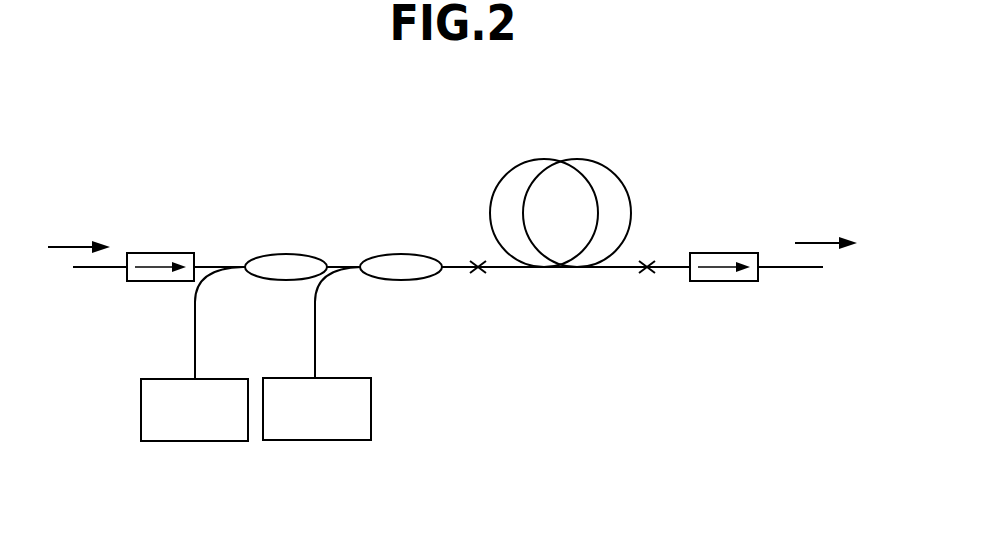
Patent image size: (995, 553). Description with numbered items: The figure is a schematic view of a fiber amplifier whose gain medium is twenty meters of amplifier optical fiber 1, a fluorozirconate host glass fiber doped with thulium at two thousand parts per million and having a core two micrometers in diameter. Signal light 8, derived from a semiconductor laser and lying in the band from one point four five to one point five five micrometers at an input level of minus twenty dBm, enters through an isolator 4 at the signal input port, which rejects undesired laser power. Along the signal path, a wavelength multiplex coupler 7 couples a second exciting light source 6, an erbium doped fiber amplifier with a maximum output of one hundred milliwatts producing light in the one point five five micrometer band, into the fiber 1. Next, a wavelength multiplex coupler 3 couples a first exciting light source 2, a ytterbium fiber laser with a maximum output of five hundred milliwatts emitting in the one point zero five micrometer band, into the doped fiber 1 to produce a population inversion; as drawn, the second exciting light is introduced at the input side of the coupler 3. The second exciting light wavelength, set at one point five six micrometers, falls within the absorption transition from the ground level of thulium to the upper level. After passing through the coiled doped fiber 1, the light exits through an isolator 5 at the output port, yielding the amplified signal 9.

The amplifier optical fiber 1 is at (532, 160).
The first exciting light source 2 is at (320, 442).
The wavelength multiplex coupler 3 is at (403, 254).
The isolator 4 is at (160, 253).
The isolator 5 is at (713, 253).
The second exciting light source 6 is at (190, 443).
The wavelength multiplex coupler 7 is at (289, 254).
The signal light 8 is at (62, 246).
The amplified signal 9 is at (809, 243).